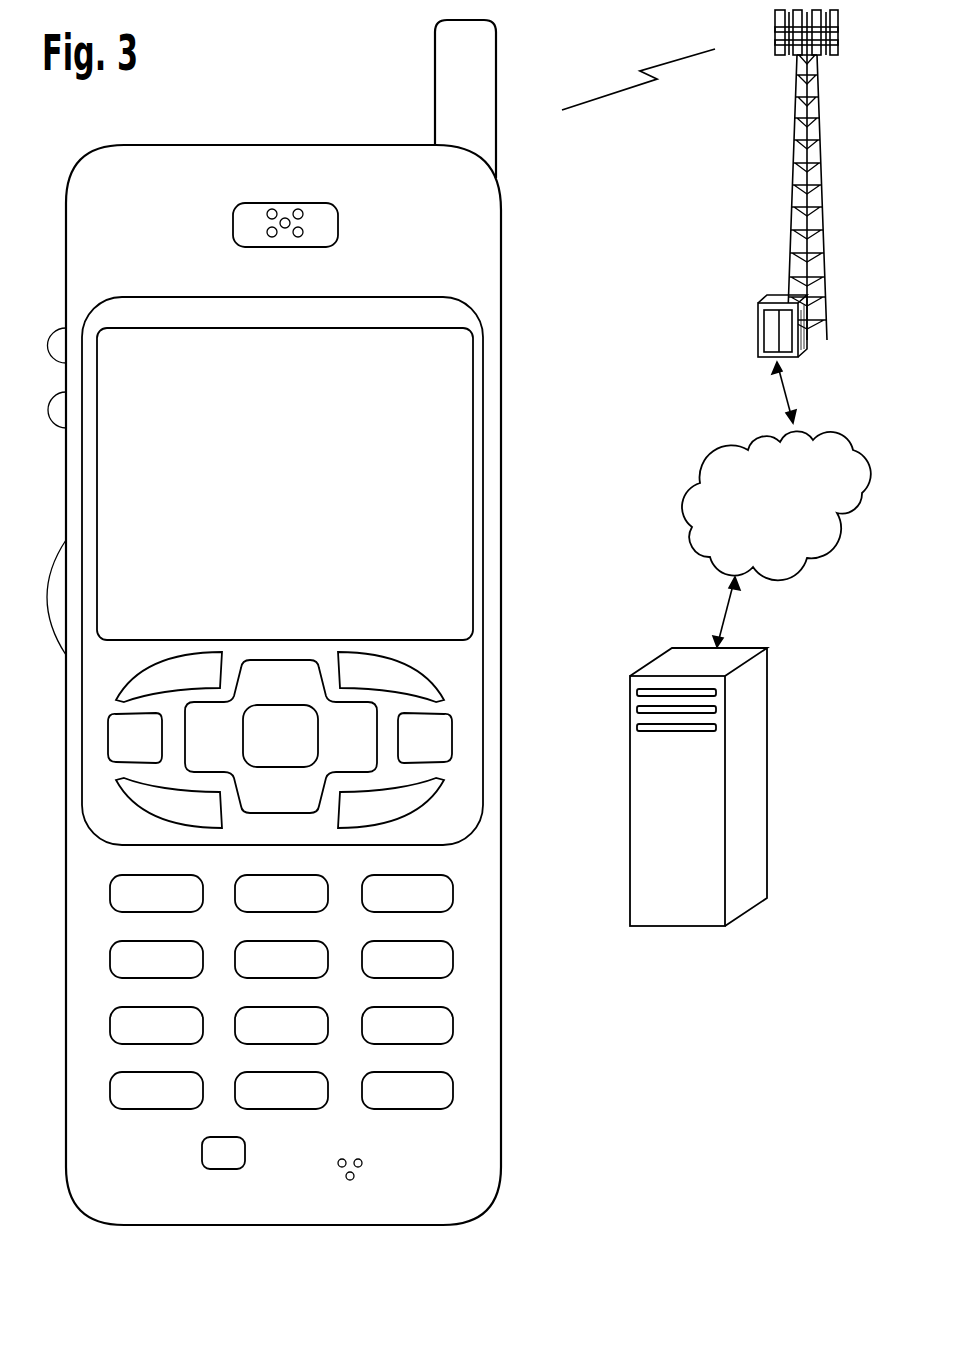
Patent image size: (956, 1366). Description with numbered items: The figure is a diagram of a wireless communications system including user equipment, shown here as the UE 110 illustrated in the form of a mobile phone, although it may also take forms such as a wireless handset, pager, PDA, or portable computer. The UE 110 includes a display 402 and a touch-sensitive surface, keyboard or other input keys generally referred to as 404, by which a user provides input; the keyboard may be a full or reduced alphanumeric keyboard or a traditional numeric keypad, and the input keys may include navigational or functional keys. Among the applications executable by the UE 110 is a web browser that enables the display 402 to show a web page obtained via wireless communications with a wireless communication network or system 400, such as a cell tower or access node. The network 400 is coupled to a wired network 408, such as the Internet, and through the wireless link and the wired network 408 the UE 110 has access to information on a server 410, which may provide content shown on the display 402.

The UE 110 is at (120, 1225).
The wireless communication network or system 400 is at (790, 198).
The display 402 is at (478, 340).
The input keys 404 is at (507, 643).
The wired network 408 is at (696, 556).
The server 410 is at (676, 927).